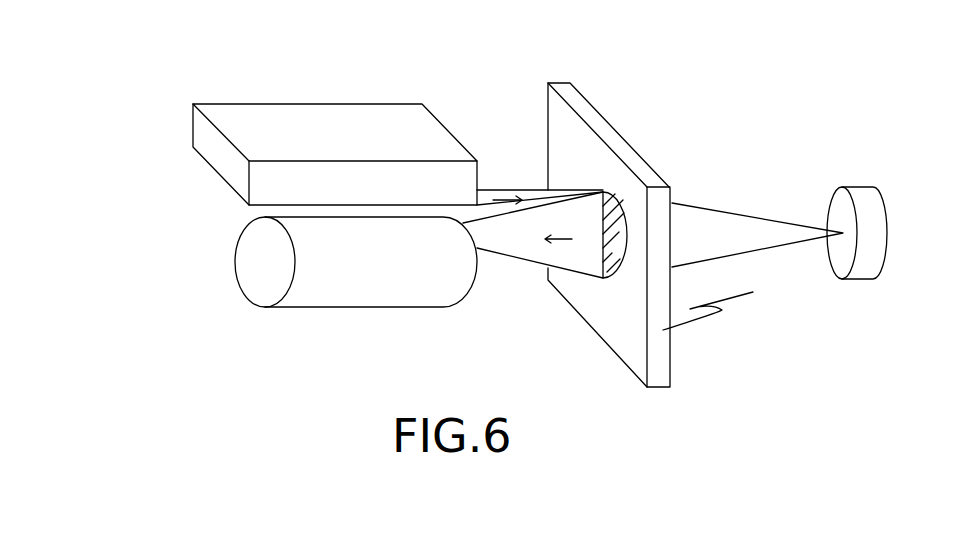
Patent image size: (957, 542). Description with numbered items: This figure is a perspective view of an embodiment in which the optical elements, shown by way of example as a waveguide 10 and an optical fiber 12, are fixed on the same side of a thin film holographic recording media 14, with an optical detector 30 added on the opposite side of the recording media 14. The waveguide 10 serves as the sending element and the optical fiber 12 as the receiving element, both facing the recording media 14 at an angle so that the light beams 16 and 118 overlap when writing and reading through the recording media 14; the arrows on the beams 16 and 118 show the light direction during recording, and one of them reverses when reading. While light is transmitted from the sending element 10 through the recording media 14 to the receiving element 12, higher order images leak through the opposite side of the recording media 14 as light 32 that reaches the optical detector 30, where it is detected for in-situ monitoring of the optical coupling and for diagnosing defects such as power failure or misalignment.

The waveguide 10 is at (357, 122).
The optical fiber 12 is at (340, 290).
The recording media 14 is at (632, 150).
The light beam 16 is at (535, 187).
The light beam 118 is at (530, 263).
The optical detector 30 is at (860, 188).
The converging light beam 32 is at (725, 230).